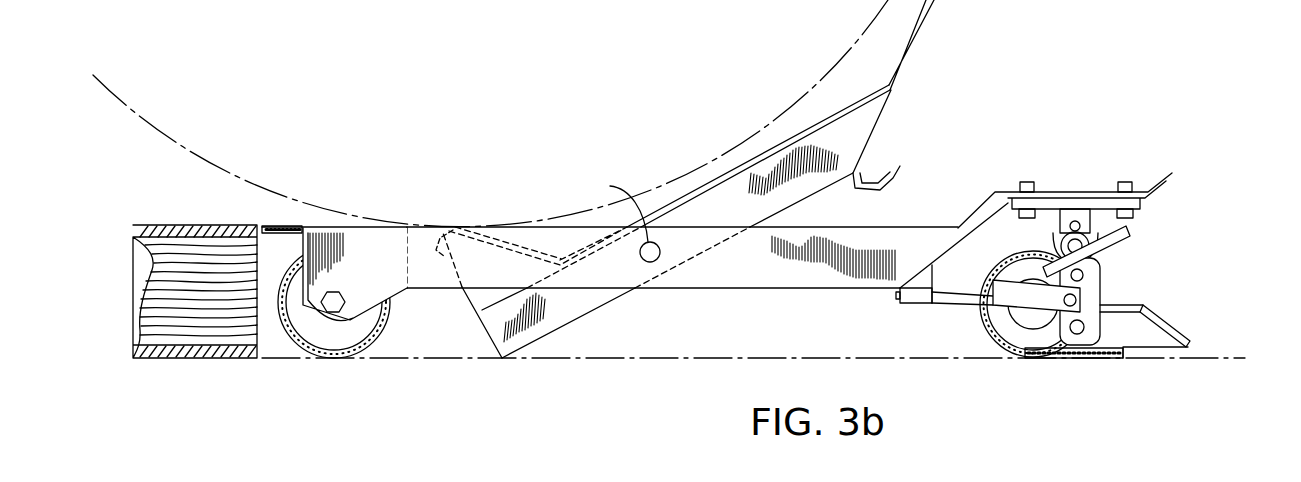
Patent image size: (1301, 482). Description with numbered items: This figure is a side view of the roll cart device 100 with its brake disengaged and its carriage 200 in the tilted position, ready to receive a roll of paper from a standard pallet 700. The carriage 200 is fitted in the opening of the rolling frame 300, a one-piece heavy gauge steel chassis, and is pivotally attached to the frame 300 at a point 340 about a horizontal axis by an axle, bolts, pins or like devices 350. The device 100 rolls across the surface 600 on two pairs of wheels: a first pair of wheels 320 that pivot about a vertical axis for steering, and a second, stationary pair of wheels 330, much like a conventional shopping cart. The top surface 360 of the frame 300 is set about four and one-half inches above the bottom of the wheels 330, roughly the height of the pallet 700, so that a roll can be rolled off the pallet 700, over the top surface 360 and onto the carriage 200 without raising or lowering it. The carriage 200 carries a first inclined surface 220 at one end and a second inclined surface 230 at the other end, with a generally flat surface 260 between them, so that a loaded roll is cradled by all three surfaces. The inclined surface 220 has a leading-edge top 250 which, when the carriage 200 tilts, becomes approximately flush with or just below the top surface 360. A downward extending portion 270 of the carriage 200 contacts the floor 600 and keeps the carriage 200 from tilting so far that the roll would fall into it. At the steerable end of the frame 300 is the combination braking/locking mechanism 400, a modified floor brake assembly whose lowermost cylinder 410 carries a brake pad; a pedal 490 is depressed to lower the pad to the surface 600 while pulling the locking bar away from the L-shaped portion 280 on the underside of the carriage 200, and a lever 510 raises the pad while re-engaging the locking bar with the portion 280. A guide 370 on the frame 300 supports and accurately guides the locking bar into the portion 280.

The device 100 is at (1072, 125).
The carriage 200 is at (734, 179).
The first inclined surface 220 is at (513, 240).
The second inclined surface 230 is at (915, 32).
The top of the inclined surface 250 is at (450, 227).
The generally flat surface 260 is at (736, 165).
The downward extending portion 270 is at (482, 326).
The portion of the carriage 280 is at (884, 176).
The frame 300 is at (750, 268).
The first pair of wheels 320 is at (998, 272).
The second pair of wheels 330 is at (367, 345).
The point 340 is at (652, 262).
The devices for pivotally attaching 350 is at (608, 207).
The top surface of the frame 360 is at (346, 285).
The guide 370 is at (915, 296).
The combination braking/locking mechanism 400 is at (1092, 265).
The lowermost cylinder 410 is at (966, 303).
The pedal 490 is at (1190, 335).
The lever 510 is at (1130, 232).
The surface 600 is at (1216, 356).
The pallet 700 is at (199, 220).